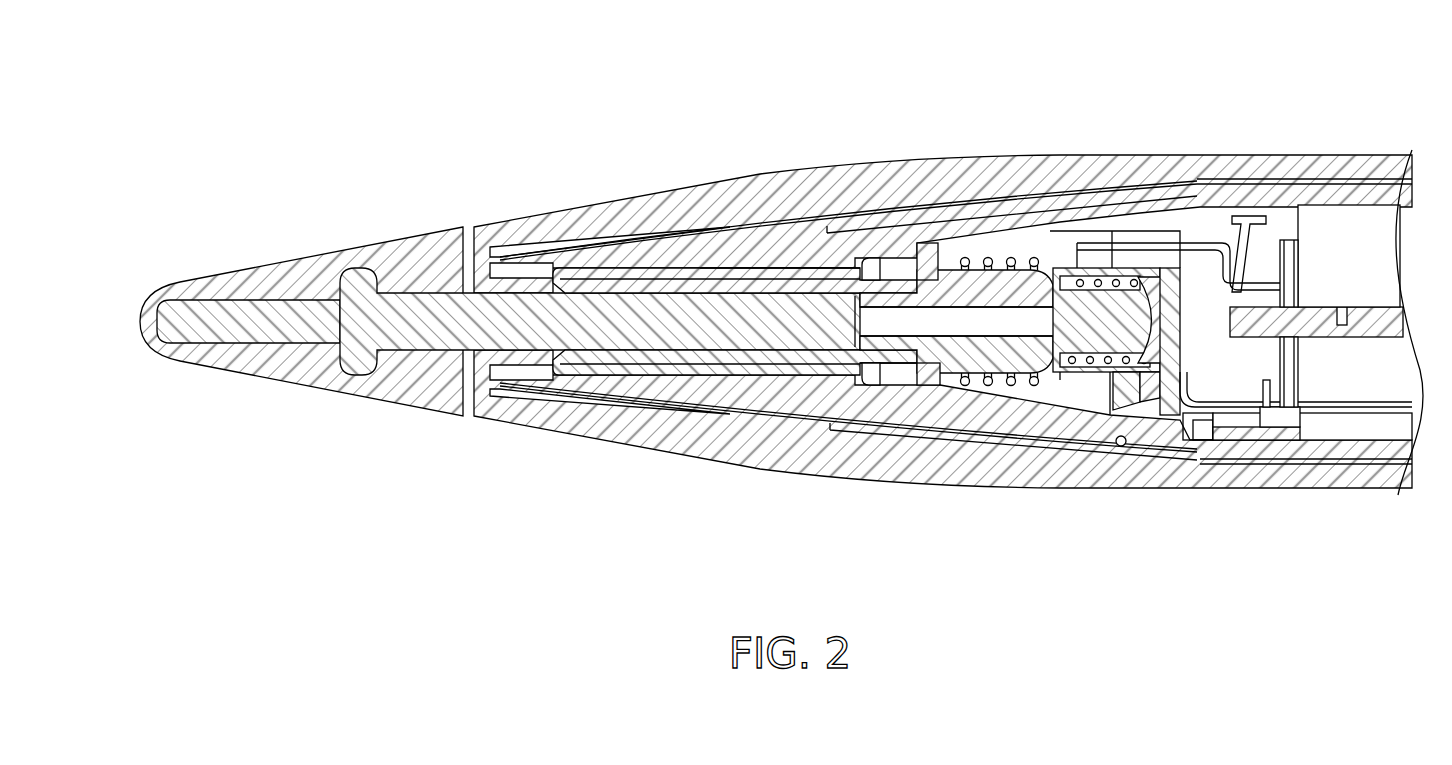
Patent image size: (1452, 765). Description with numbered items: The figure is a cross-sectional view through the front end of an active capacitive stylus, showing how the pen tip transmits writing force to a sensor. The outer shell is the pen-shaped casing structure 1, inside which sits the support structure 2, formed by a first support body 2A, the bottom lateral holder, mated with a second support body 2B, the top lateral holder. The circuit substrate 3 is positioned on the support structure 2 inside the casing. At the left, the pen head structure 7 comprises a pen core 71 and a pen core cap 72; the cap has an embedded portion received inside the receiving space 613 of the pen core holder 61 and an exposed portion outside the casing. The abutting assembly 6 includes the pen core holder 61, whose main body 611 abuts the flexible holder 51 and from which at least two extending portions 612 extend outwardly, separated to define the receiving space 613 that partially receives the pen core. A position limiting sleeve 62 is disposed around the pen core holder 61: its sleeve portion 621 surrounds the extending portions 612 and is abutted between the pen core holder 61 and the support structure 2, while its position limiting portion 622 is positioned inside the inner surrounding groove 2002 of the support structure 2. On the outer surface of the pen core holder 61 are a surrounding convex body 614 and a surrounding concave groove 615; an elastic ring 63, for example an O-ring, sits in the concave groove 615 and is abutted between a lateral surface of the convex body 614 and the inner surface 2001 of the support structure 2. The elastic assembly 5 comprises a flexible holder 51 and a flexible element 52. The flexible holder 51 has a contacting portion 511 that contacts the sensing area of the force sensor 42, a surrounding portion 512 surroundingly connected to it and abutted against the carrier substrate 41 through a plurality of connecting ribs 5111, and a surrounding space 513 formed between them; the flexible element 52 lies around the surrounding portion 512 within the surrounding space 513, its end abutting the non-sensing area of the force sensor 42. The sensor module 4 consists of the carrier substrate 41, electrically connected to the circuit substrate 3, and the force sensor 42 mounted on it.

The pen-shaped casing structure 1 is at (612, 206).
The support structure 2 is at (628, 407).
The first support body 2A is at (610, 380).
The second support body 2B is at (525, 284).
The inner surface 2001 is at (920, 364).
The inner surrounding groove 2002 is at (861, 390).
The circuit substrate 3 is at (1380, 311).
The sensor module 4 is at (1231, 231).
The carrier substrate 41 is at (1240, 282).
The force sensor 42 is at (1172, 288).
The elastic assembly 5 is at (1099, 301).
The flexible holder 51 is at (1100, 314).
The contacting portion 511 is at (1090, 340).
The connecting ribs 5111 is at (1030, 386).
The surrounding portion 512 is at (1155, 382).
The surrounding space 513 is at (1117, 370).
The flexible element 52 is at (1150, 300).
The abutting assembly 6 is at (876, 306).
The pen core holder 61 is at (901, 326).
The main body 611 is at (967, 360).
The extending portions 612 is at (710, 272).
The receiving space 613 is at (812, 354).
The surrounding convex body 614 is at (938, 388).
The surrounding concave groove 615 is at (941, 266).
The position limiting sleeve 62 is at (795, 304).
The sleeve portion 621 is at (782, 268).
The position limiting portion 622 is at (870, 256).
The elastic ring 63 is at (950, 262).
The pen head structure 7 is at (301, 275).
The pen core 71 is at (276, 310).
The pen core cap 72 is at (328, 262).